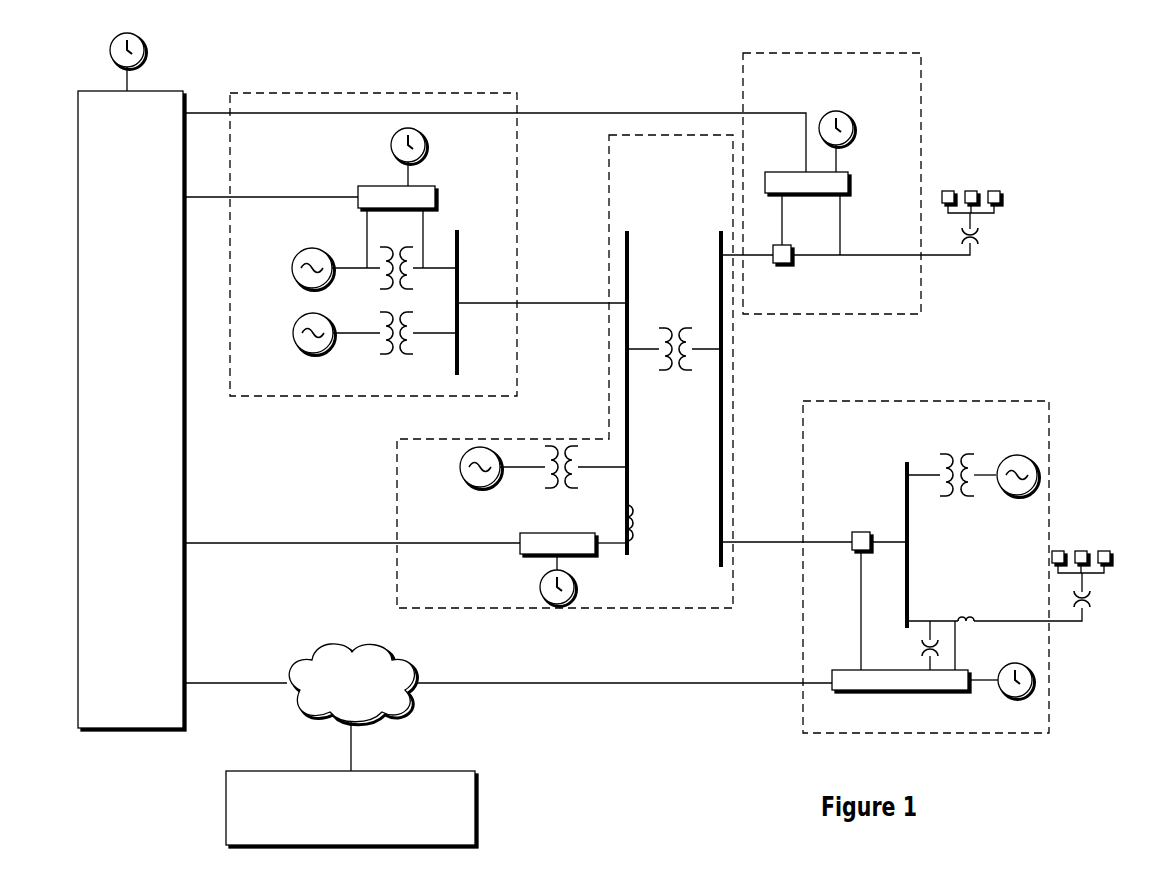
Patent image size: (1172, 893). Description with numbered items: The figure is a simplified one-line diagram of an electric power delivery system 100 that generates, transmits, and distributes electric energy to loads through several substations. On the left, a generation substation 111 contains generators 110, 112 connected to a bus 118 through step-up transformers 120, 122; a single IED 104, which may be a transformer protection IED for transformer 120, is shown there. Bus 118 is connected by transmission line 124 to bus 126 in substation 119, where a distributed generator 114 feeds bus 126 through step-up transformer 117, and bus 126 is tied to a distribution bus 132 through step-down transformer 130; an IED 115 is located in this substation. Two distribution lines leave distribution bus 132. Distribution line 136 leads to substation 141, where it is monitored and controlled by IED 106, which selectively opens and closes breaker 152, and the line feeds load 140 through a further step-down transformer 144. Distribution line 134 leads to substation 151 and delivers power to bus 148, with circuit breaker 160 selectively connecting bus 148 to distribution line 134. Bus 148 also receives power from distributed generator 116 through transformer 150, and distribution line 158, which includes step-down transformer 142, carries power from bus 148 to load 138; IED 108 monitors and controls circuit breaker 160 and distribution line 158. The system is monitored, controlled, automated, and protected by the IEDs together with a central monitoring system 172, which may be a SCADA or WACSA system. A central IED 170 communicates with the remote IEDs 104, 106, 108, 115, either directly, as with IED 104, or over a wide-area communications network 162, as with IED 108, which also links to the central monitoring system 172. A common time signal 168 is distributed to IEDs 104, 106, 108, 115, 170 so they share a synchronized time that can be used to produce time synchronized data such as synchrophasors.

The electric power delivery system 100 is at (1018, 125).
The IED 104 is at (372, 186).
The IED 106 is at (780, 172).
The IED 108 is at (945, 691).
The generator 110 is at (292, 265).
The generation substation 111 is at (313, 397).
The generator 112 is at (293, 330).
The generator 114 is at (460, 464).
The IED 115 is at (580, 533).
The distributed generator 116 is at (1007, 494).
The step-up transformer 117 is at (548, 482).
The bus 118 is at (460, 352).
The substation 119 is at (508, 609).
The step-up transformer 120 is at (380, 287).
The step-up transformer 122 is at (396, 356).
The transmission line 124 is at (553, 304).
The bus 126 is at (630, 395).
The step-down transformer 130 is at (672, 330).
The distribution bus 132 is at (718, 528).
The distribution line 134 is at (812, 543).
The distribution line 136 is at (756, 257).
The load 138 is at (1082, 549).
The load 140 is at (1003, 197).
The substation 141 is at (900, 315).
The step-down transformer 142 is at (1092, 607).
The step-down transformer 144 is at (985, 238).
The bus 148 is at (903, 465).
The transformer 150 is at (958, 454).
The substation 151 is at (990, 734).
The breaker 152 is at (793, 262).
The distribution line 158 is at (990, 619).
The circuit breaker 160 is at (860, 532).
The communications network 162 is at (353, 684).
The common time signal 168 is at (145, 48).
The central IED 170 is at (132, 411).
The central monitoring system 172 is at (352, 809).